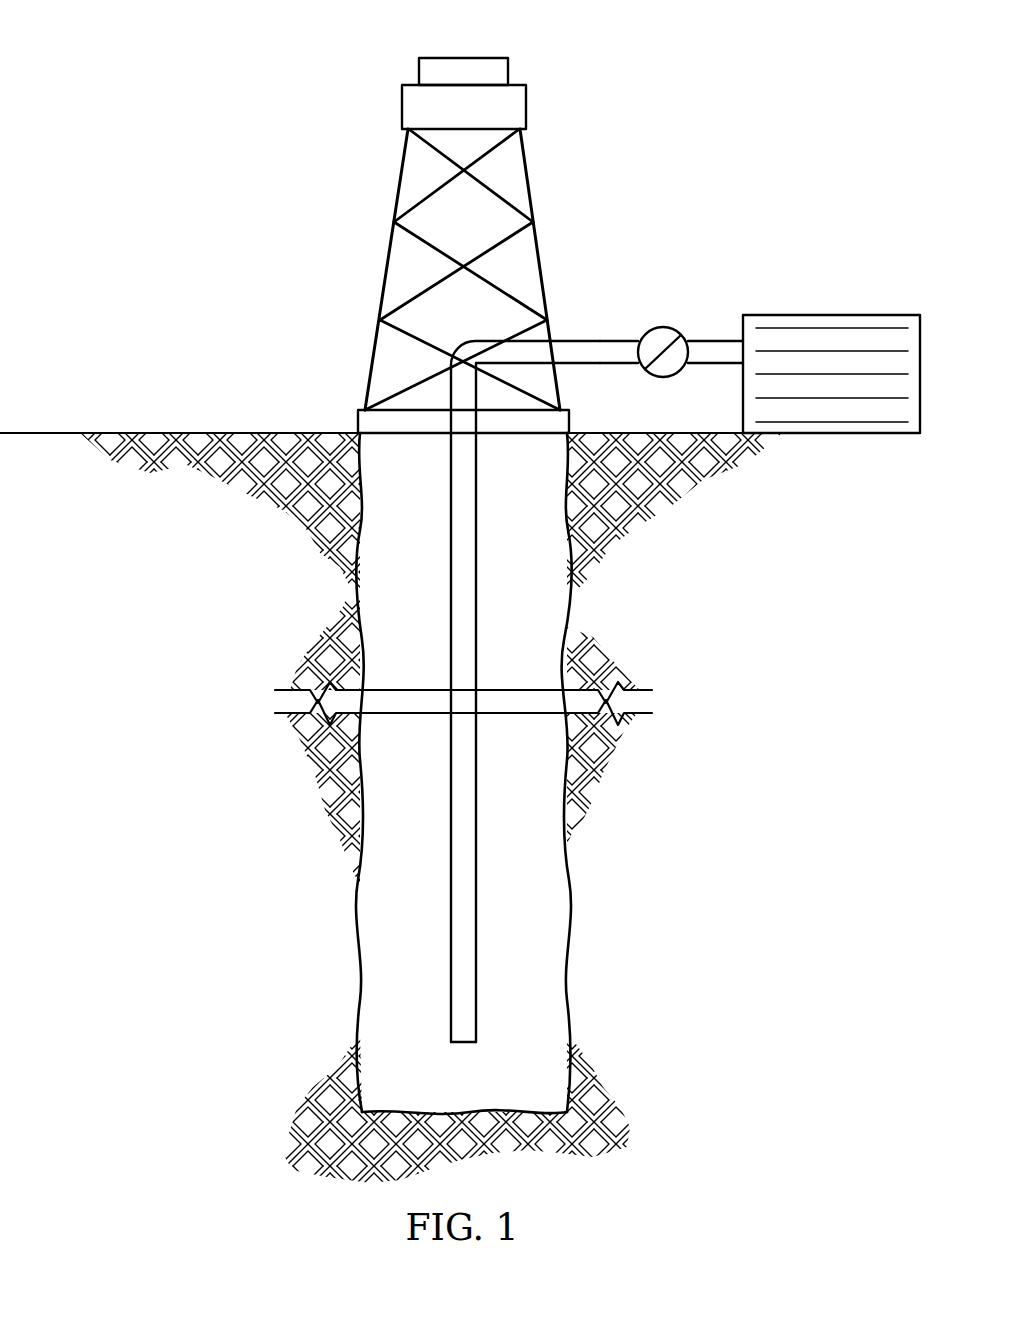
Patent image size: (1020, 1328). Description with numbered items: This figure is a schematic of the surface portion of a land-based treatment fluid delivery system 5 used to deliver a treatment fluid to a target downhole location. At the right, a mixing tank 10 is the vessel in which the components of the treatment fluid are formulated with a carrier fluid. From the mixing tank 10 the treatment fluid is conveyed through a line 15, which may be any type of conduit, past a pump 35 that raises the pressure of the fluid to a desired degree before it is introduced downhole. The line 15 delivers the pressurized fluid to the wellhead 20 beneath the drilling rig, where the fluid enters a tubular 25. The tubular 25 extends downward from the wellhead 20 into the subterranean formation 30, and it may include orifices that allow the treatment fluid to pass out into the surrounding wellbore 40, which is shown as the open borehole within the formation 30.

The treatment fluid delivery system 5 is at (333, 67).
The mixing tank 10 is at (832, 315).
The line 15 is at (593, 339).
The wellhead 20 is at (357, 420).
The tubular 25 is at (466, 561).
The subterranean formation 30 is at (268, 613).
The pump 35 is at (662, 327).
The wellbore 40 is at (356, 958).